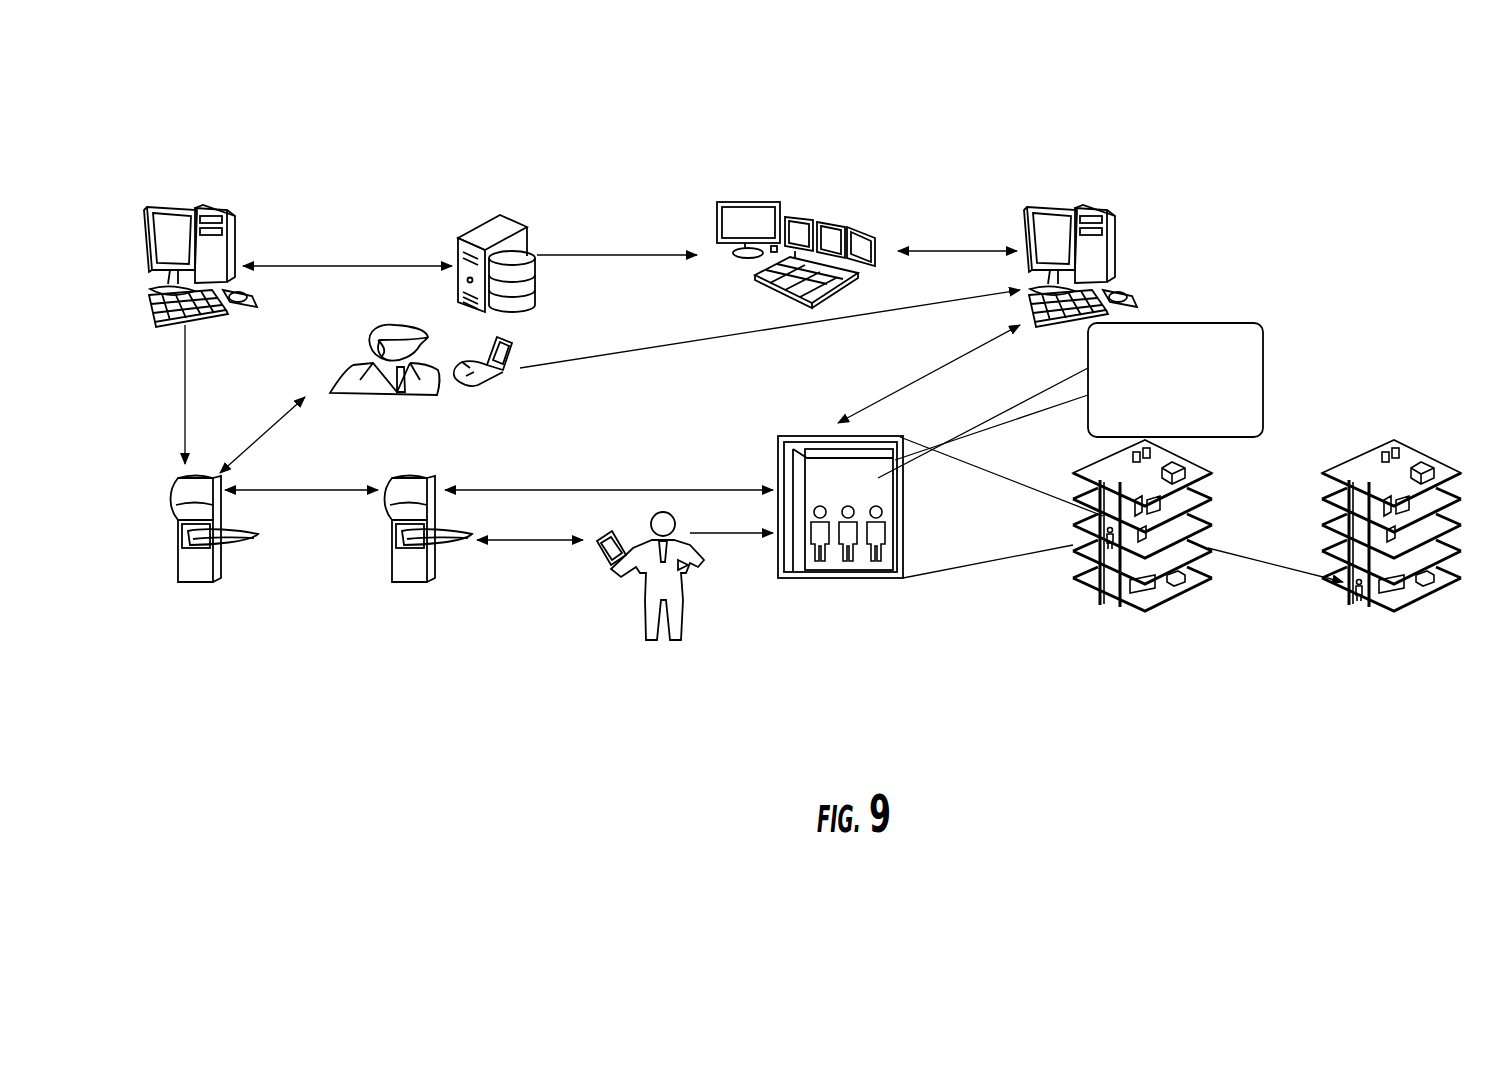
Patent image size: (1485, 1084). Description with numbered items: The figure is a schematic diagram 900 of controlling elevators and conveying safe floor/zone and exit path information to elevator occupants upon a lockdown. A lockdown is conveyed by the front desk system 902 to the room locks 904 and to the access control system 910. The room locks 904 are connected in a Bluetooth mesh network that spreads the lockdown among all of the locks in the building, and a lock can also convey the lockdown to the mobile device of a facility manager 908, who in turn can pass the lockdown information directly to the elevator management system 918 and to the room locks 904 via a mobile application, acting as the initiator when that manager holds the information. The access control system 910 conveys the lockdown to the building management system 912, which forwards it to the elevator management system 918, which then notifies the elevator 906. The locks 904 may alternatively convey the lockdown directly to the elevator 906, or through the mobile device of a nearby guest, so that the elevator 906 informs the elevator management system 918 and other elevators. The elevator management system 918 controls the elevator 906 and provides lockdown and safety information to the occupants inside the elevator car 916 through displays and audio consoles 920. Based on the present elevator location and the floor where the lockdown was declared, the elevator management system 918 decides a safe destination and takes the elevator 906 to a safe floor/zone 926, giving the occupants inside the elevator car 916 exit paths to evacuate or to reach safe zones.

The schematic diagram 900 is at (1290, 126).
The front desk system 902 is at (181, 166).
The room locks 904 is at (200, 628).
The elevator 906 is at (790, 436).
The facility manager 908 is at (540, 411).
The access control system 910 is at (495, 166).
The building management system 912 is at (778, 166).
The occupants inside the elevator car 916 is at (842, 648).
The elevator management system 918 is at (1080, 166).
The displays and/or audio consoles 920 is at (1265, 375).
The safe floor/zone 926 is at (1385, 673).